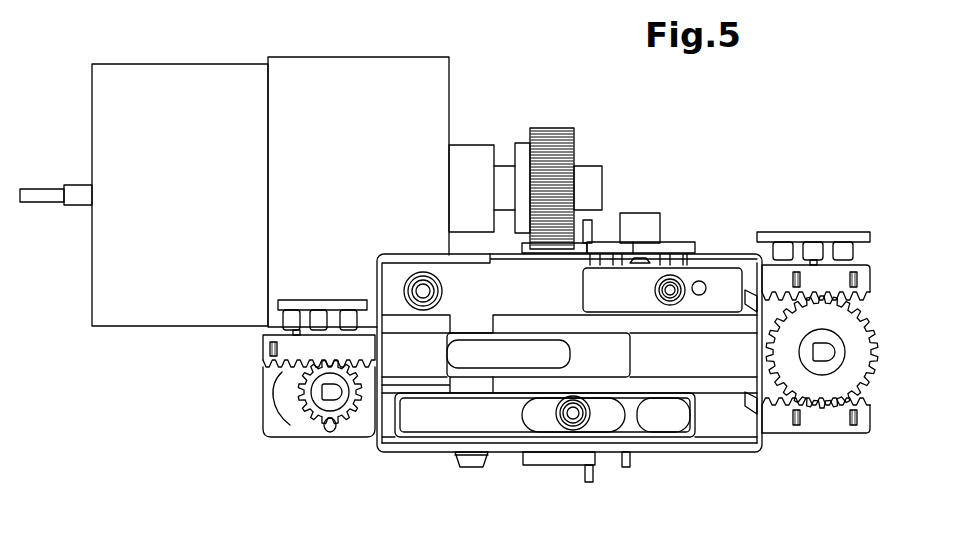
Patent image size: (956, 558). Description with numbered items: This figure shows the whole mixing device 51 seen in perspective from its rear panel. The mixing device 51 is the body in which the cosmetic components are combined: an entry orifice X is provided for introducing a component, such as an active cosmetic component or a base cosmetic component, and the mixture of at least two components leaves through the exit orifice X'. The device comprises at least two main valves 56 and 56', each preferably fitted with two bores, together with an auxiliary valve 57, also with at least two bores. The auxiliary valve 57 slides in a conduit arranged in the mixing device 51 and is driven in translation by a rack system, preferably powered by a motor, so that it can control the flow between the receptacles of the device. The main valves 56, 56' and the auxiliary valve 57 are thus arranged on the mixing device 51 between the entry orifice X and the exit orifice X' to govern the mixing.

The mixing device 51 is at (392, 278).
The main valve 56 is at (817, 290).
The main valve 56' is at (816, 444).
The auxiliary valve 57 is at (327, 345).
The entry orifice X is at (683, 245).
The exit orifice X' is at (556, 464).